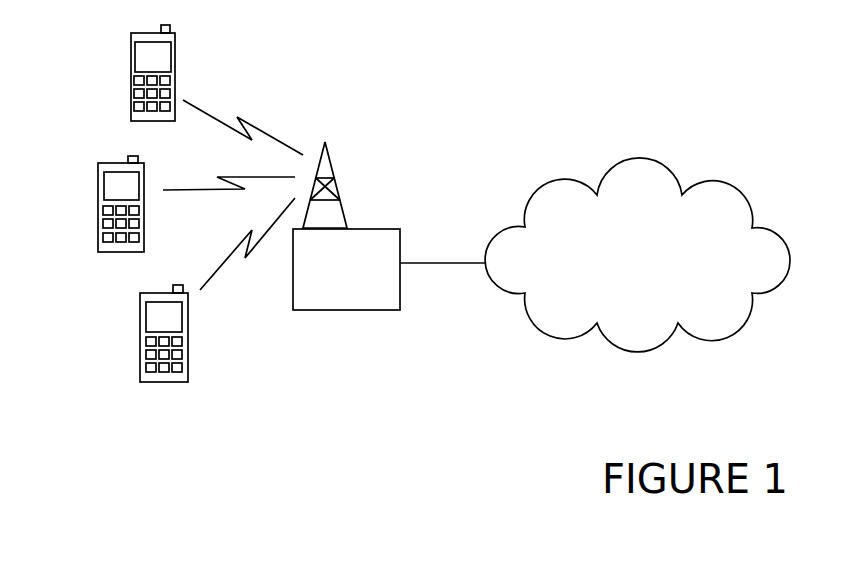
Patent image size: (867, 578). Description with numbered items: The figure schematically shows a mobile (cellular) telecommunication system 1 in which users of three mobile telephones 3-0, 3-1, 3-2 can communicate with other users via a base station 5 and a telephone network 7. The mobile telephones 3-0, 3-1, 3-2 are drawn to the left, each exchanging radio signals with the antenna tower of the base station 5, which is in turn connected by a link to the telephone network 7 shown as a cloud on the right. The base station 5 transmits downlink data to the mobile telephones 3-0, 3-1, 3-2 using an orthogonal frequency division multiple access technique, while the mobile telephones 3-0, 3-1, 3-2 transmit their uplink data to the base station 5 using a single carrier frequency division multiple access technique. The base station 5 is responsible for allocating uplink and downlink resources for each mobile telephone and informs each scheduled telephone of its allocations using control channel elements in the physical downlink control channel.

The mobile telecommunication system 1 is at (407, 253).
The mobile telephone 3-0 is at (130, 116).
The mobile telephone 3-1 is at (97, 242).
The mobile telephone 3-2 is at (140, 370).
The base station 5 is at (379, 228).
The telephone network 7 is at (667, 165).